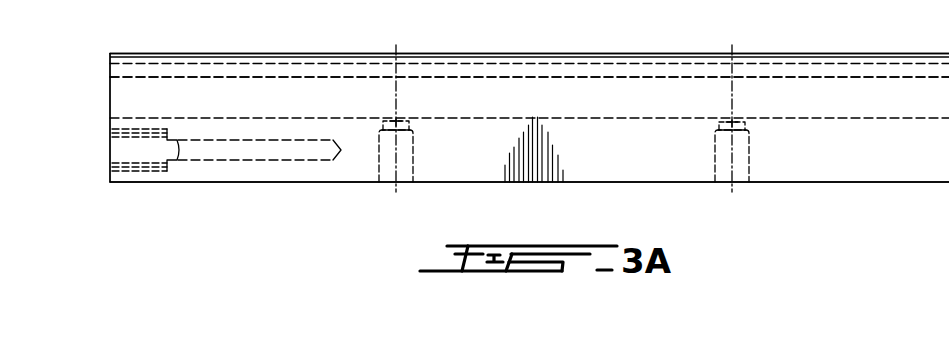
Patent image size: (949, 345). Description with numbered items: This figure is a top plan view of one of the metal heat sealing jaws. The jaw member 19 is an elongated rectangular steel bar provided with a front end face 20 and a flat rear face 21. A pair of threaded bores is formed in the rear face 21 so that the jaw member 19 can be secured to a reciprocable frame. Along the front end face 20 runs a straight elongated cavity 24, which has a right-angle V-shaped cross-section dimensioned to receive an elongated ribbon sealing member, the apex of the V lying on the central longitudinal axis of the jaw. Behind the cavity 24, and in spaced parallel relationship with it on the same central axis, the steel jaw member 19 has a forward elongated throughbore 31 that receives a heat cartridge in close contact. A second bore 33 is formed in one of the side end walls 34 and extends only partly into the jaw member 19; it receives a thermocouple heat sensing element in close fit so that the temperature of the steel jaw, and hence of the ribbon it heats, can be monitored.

The jaw member 19 is at (611, 151).
The end face 20 is at (773, 54).
The flat rear face 21 is at (685, 182).
The elongated cavity 24 is at (225, 63).
The forward elongated throughbore 31 is at (327, 80).
The second bore 33 is at (226, 161).
The side end wall 34 is at (111, 176).